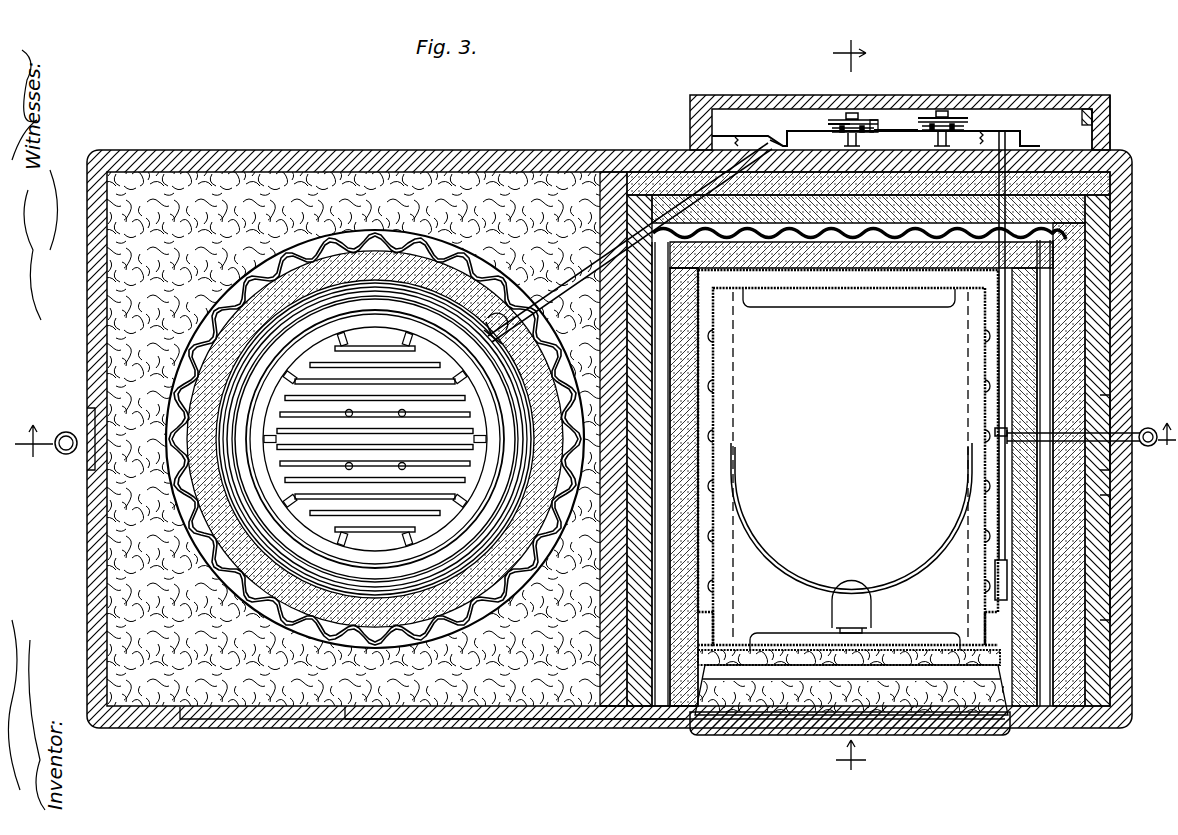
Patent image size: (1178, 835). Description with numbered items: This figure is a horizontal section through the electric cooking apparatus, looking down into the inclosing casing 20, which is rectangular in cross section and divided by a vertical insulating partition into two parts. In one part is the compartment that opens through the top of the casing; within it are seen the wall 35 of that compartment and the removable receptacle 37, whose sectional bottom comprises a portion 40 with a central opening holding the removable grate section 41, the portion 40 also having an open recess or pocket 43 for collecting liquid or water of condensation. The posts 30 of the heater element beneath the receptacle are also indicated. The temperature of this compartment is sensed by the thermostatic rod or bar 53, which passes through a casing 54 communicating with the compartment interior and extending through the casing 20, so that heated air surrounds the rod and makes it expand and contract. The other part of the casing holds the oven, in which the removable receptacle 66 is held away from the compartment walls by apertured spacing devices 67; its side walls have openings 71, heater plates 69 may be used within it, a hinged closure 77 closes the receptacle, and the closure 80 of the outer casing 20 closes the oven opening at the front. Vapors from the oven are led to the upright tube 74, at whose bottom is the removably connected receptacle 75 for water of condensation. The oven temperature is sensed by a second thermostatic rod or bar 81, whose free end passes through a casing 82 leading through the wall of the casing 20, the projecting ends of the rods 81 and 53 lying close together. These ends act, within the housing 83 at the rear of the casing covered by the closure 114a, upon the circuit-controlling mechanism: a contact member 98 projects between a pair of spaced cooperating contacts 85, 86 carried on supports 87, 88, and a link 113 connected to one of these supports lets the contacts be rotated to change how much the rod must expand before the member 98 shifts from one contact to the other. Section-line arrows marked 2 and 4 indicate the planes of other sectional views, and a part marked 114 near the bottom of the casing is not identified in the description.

The inclosing casing 20 is at (1120, 682).
The closure 114a is at (728, 97).
The housing 83 is at (1104, 97).
The casing 82 is at (1040, 147).
The contact member 98 is at (790, 131).
The contact 86 is at (848, 120).
The support 88 is at (845, 128).
The link 113 is at (882, 130).
The contact 85 is at (906, 125).
The support 87 is at (896, 139).
The thermostatic rod or bar 81 is at (1005, 131).
The casing 54 is at (632, 250).
The spacing devices 67 is at (708, 384).
The removable receptacle 66 is at (723, 432).
The heater plates 69 is at (919, 313).
The openings 71 is at (726, 548).
The closure 77 is at (912, 644).
The closure 80 is at (985, 713).
The bottom plate 114 is at (623, 690).
The upright tube 74 is at (1143, 447).
The receptacle 75 is at (1146, 427).
The section line 2- 2 is at (849, 406).
The section line 4- 4 is at (588, 448).
The lugs or posts 30 is at (62, 452).
The open recess or pocket 43 is at (240, 527).
The wall of the compartment 35 is at (213, 400).
The removable grate section 41 is at (270, 462).
The removable receptacle 37 is at (247, 497).
The portion of the bottom 40 is at (265, 522).
The thermostatic rod or bar 53 is at (588, 288).